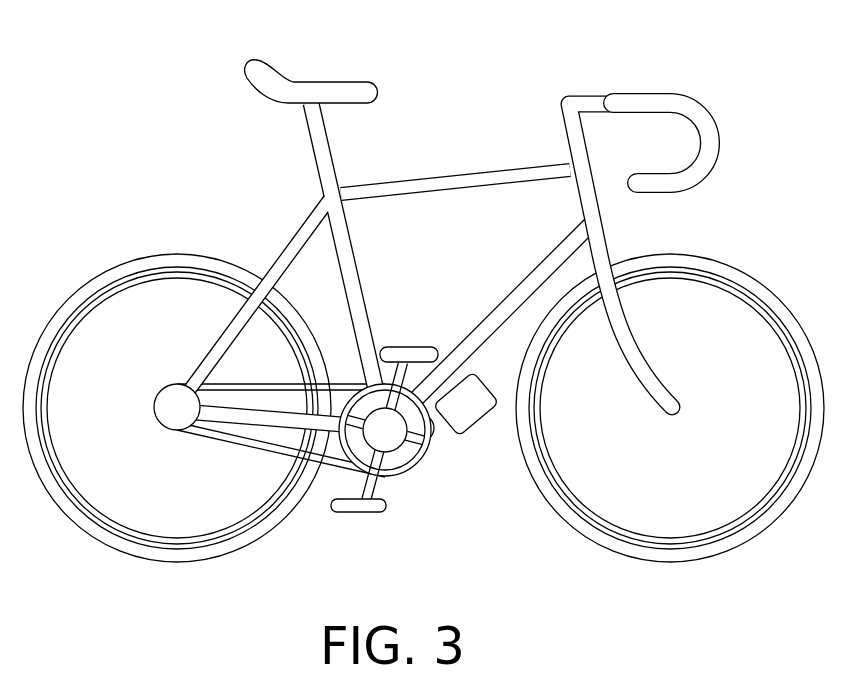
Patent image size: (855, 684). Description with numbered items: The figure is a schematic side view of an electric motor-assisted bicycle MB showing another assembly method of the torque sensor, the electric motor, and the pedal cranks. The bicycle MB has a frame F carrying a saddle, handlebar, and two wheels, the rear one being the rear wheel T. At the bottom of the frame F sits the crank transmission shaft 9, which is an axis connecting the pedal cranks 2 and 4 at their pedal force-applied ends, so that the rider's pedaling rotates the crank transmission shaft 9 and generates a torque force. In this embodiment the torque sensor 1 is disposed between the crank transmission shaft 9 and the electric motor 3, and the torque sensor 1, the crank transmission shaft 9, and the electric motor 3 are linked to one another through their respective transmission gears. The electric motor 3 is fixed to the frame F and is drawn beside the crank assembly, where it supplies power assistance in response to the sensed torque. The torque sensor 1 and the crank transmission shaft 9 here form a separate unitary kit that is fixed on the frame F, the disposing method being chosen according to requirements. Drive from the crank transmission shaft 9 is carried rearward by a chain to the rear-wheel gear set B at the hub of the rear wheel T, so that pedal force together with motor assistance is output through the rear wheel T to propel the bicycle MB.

The rear wheel T is at (77, 300).
The rear-wheel gear set B is at (172, 398).
The frame F is at (430, 181).
The electric motor-assisted bicycle MB is at (616, 71).
The torque sensor 1 is at (434, 457).
The pedal crank 2 is at (402, 355).
The electric motor 3 is at (478, 440).
The pedal crank 4 is at (362, 511).
The crank transmission shaft 9 is at (392, 446).